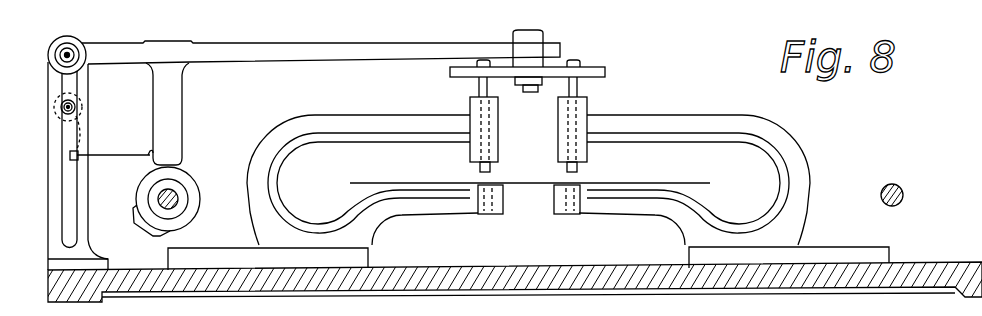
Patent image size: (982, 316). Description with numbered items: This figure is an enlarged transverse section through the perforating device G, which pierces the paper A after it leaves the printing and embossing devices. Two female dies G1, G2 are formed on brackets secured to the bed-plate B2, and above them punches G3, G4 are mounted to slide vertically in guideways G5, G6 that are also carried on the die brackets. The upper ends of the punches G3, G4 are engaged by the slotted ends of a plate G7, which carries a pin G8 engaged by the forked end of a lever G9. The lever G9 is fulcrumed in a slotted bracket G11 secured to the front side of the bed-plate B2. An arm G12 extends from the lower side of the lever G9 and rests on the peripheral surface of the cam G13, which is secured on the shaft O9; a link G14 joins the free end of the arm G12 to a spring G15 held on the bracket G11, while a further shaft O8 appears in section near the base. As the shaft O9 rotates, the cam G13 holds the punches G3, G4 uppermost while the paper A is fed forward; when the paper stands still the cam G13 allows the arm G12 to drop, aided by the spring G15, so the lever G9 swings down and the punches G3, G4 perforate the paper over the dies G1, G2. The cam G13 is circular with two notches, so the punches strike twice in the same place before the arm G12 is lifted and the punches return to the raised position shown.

The perforating device G is at (528, 152).
The female die G1 is at (494, 215).
The female die G2 is at (555, 215).
The punch G3 is at (491, 167).
The punch G4 is at (578, 166).
The guideway G5 is at (470, 106).
The guideway G6 is at (588, 107).
The plate G7 is at (592, 66).
The pin G8 is at (546, 33).
The lever G9 is at (448, 32).
The slotted bracket G11 is at (52, 81).
The arm G12 is at (183, 113).
The cam G13 is at (199, 211).
The link G14 is at (120, 154).
The spring G15 is at (72, 143).
The shaft O9 is at (176, 188).
The shaft O8 is at (903, 189).
The paper A is at (552, 183).
The bed-plate B2 is at (975, 256).